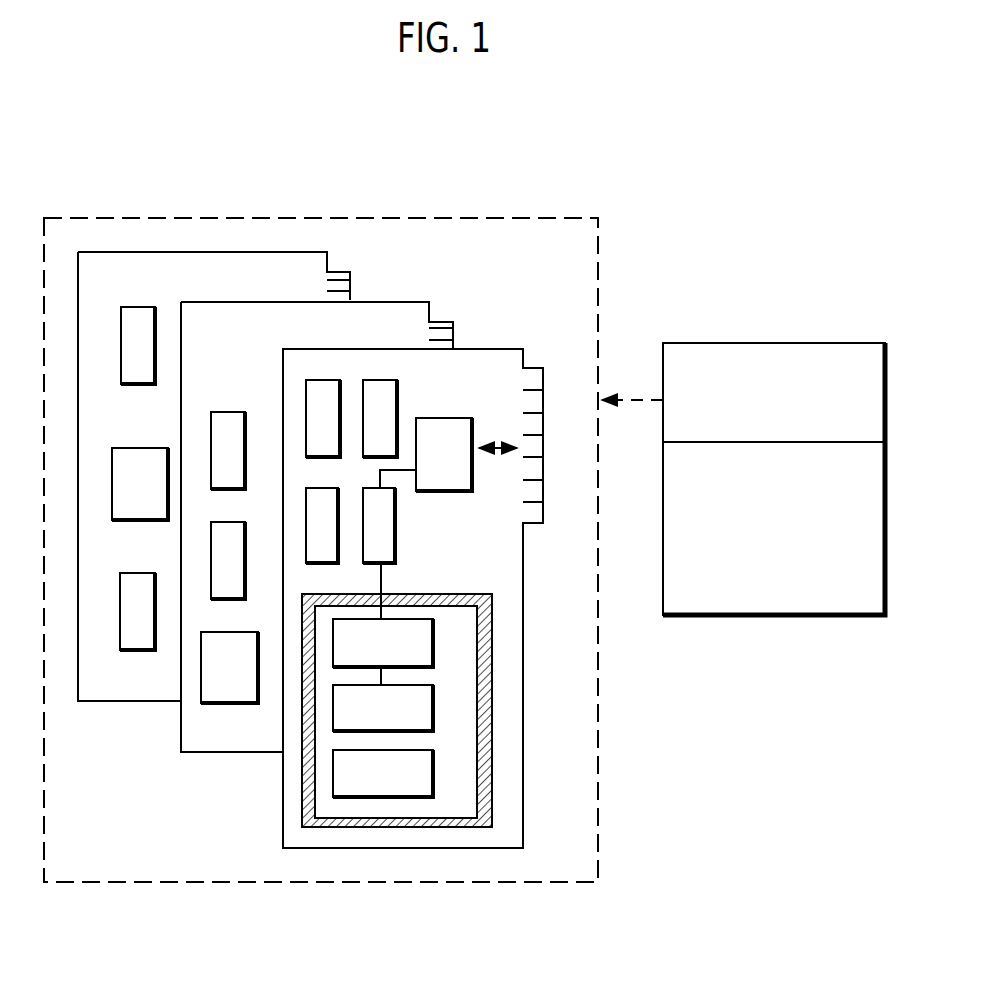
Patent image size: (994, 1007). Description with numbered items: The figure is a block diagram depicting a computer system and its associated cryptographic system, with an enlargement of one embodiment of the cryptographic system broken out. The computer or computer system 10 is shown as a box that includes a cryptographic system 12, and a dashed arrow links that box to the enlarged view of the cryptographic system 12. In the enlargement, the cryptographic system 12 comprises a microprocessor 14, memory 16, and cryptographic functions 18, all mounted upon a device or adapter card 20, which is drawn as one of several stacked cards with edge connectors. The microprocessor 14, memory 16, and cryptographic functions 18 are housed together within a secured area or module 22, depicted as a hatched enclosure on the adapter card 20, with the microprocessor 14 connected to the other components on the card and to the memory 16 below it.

The computer system 10 is at (790, 615).
The cryptographic system 12 is at (836, 343).
The microprocessor 14 is at (435, 638).
The memory 16 is at (435, 705).
The cryptographic functions 18 is at (435, 772).
The adapter card 20 is at (549, 366).
The secured module 22 is at (413, 831).